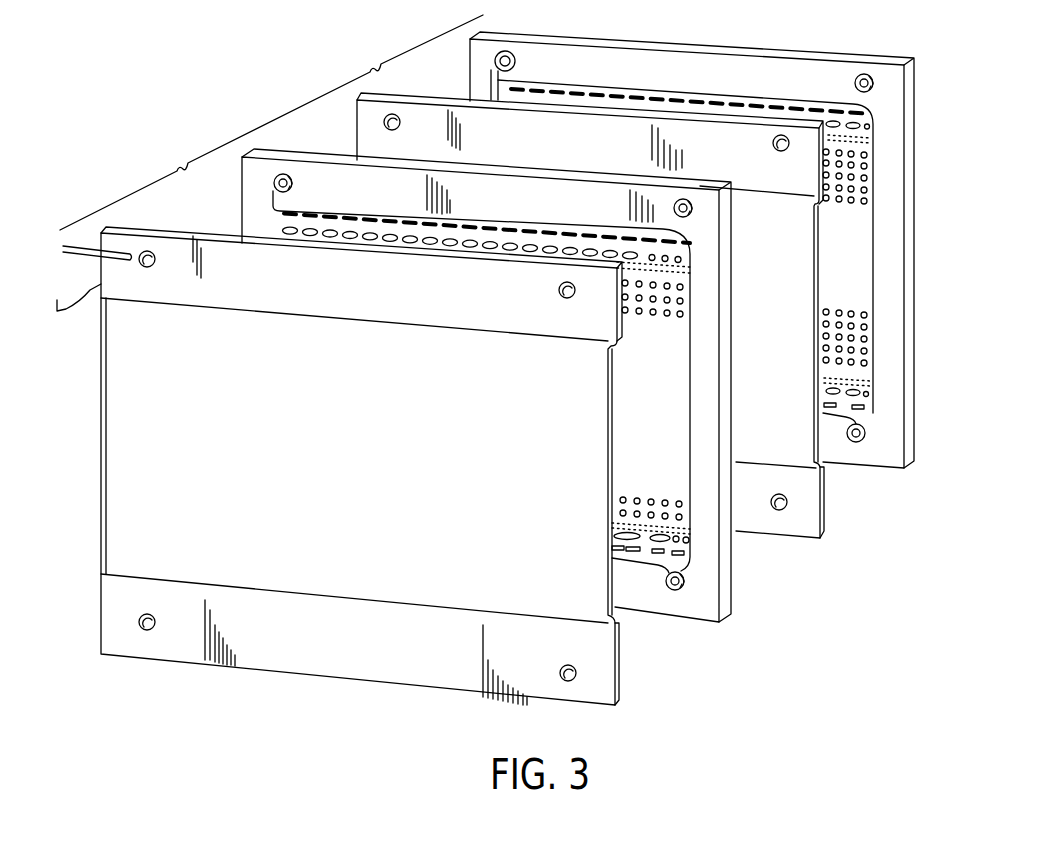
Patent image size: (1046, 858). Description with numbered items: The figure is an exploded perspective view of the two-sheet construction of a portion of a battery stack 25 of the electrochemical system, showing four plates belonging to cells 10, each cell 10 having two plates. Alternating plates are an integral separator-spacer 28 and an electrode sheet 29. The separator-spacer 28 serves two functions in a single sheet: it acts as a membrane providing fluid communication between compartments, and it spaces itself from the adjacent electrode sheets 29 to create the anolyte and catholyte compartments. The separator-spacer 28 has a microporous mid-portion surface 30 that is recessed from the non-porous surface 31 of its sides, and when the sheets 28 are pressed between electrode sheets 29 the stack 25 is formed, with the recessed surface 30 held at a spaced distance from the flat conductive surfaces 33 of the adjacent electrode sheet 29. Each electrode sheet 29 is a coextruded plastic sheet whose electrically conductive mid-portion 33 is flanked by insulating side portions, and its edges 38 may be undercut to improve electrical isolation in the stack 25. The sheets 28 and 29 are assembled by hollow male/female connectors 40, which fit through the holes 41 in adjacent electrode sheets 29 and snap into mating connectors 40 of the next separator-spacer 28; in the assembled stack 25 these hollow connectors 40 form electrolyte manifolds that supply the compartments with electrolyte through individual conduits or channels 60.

The cell 10 is at (270, 163).
The battery stack 25 is at (260, 88).
The separator-spacer 28 is at (890, 480).
The electrode sheet 29 is at (826, 546).
The microporous mid-portion surface 30 is at (862, 213).
The non-porous surface 31 is at (896, 252).
The flat conductive surface 33 is at (805, 294).
The edge 38 is at (815, 250).
The hollow male/female connector 40 is at (874, 84).
The hole 41 is at (383, 124).
The conduit 60 is at (517, 70).